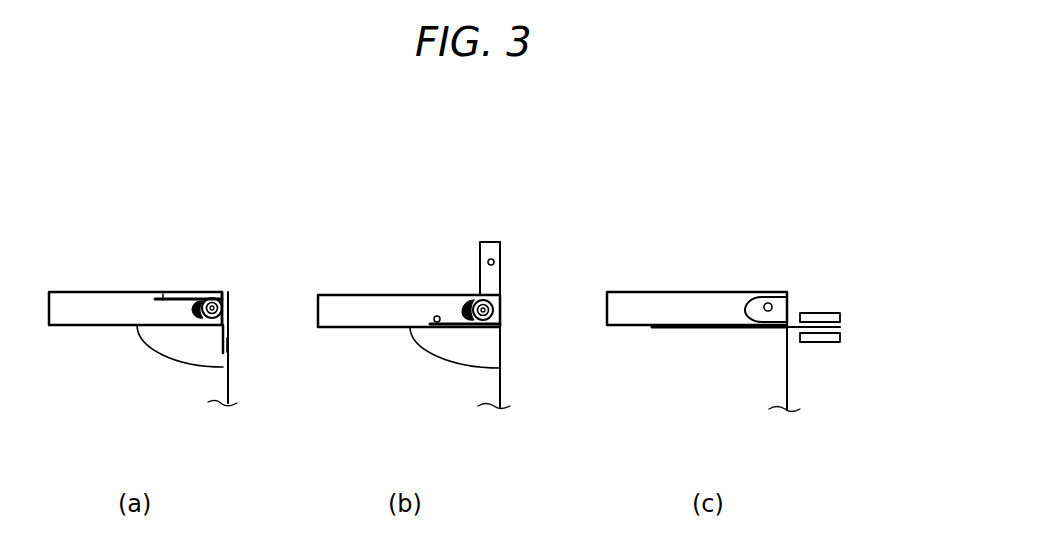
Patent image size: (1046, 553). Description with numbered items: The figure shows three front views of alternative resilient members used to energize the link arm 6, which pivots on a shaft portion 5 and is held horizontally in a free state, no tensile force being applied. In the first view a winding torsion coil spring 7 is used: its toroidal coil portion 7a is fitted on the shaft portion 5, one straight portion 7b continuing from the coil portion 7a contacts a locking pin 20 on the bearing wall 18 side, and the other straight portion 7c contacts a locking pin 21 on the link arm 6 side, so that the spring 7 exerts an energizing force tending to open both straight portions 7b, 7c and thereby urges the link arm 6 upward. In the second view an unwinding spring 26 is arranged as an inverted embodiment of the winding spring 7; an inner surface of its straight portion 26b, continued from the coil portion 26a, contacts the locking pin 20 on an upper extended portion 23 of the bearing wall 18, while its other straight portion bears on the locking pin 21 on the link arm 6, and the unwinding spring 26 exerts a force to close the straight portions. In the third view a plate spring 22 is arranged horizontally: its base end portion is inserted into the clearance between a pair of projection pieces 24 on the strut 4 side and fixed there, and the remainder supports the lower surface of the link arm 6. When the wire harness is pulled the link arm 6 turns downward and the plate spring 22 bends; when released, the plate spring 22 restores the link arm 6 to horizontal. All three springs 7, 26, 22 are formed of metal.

The strut 4 is at (223, 377).
The shaft portion 5 is at (212, 298).
The link arm 6 is at (80, 292).
The torsion coil spring 7 is at (222, 292).
The coil portion 7a is at (193, 310).
The straight portion 7b is at (225, 334).
The straight portion 7c is at (186, 294).
The bearing wall 18 is at (188, 338).
The locking pin 20 is at (227, 353).
The locking pin 21 is at (436, 316).
The plate spring 22 is at (713, 330).
The upper extended portion 23 is at (503, 260).
The projection pieces 24 is at (840, 315).
The unwinding spring 26 is at (502, 312).
The coil portion 26a is at (466, 299).
The straight portion 26b is at (502, 279).